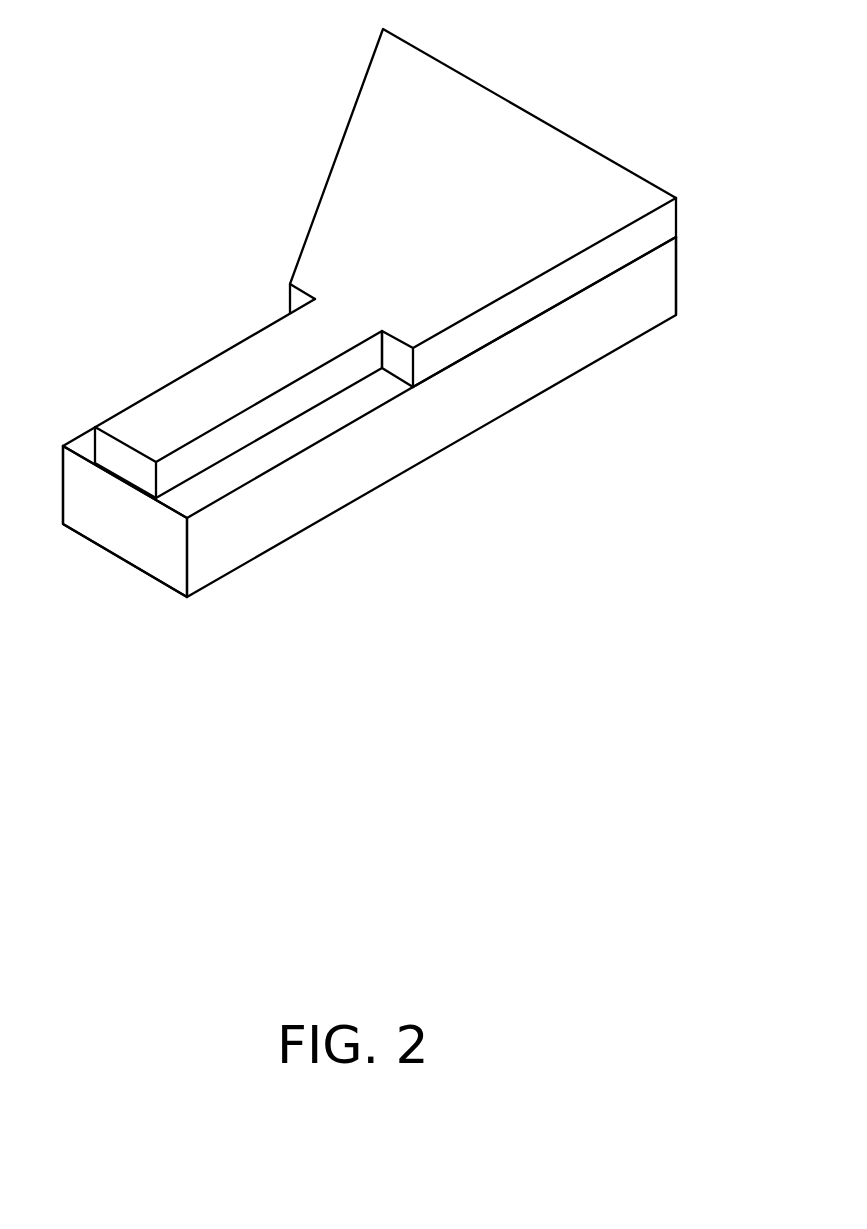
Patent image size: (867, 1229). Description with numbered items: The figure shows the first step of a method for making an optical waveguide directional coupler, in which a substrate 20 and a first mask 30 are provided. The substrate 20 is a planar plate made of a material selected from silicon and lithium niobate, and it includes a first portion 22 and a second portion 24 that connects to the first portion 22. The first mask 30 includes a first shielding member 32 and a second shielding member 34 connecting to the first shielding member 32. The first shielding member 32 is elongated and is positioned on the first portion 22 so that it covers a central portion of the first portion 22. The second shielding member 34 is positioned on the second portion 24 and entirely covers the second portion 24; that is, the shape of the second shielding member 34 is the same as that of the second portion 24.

The substrate 20 is at (369, 432).
The first portion 22 is at (333, 492).
The second portion 24 is at (553, 347).
The first mask 30 is at (660, 230).
The first shielding member 32 is at (177, 412).
The second shielding member 34 is at (577, 158).